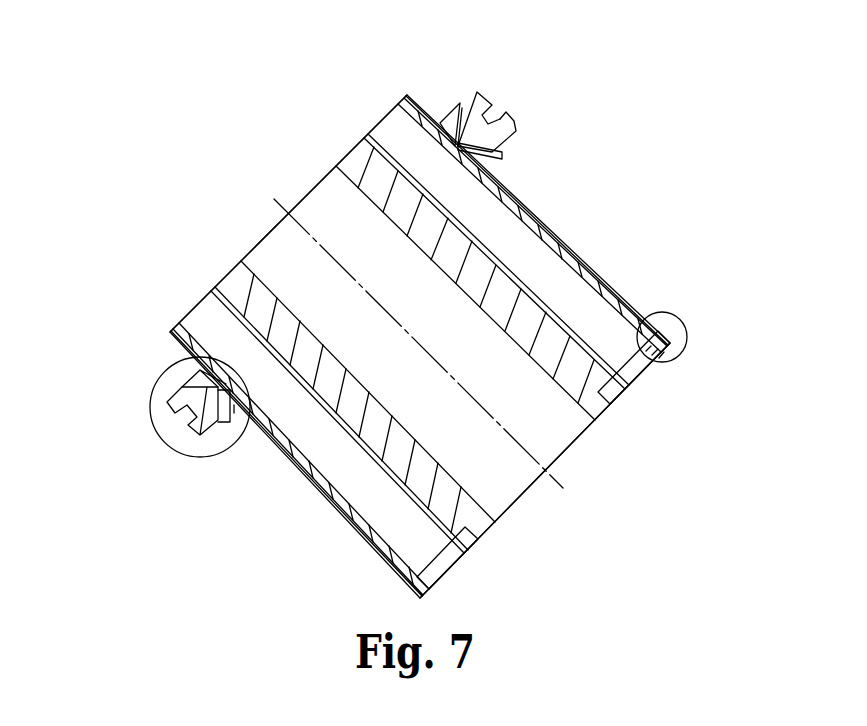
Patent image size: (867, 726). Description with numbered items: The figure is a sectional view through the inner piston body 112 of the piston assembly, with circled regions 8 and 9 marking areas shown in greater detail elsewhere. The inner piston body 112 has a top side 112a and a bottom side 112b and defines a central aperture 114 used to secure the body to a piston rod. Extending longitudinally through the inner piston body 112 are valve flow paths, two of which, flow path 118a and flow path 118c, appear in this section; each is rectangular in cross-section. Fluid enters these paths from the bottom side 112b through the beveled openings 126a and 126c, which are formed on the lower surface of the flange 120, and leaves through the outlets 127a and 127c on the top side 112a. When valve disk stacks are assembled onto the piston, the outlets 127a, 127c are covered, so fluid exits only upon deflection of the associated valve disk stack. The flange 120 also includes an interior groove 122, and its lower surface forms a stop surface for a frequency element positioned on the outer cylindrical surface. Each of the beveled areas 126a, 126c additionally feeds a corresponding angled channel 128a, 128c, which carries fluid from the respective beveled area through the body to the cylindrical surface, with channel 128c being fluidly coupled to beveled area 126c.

The detail circle 8 is at (150, 410).
The detail circle 9 is at (686, 311).
The inner piston body 112 is at (207, 161).
The top side 112a is at (494, 531).
The bottom side 112b is at (234, 262).
The central aperture 114 is at (312, 327).
The flow path 118a is at (535, 253).
The flow path 118c is at (347, 474).
The flange 120 is at (454, 97).
The interior groove 122 is at (503, 111).
The opening 126a is at (440, 122).
The opening 126c is at (198, 370).
The outlet 127a is at (640, 382).
The outlet 127c is at (456, 568).
The angled channel 128a is at (514, 136).
The angled channel 128c is at (224, 434).